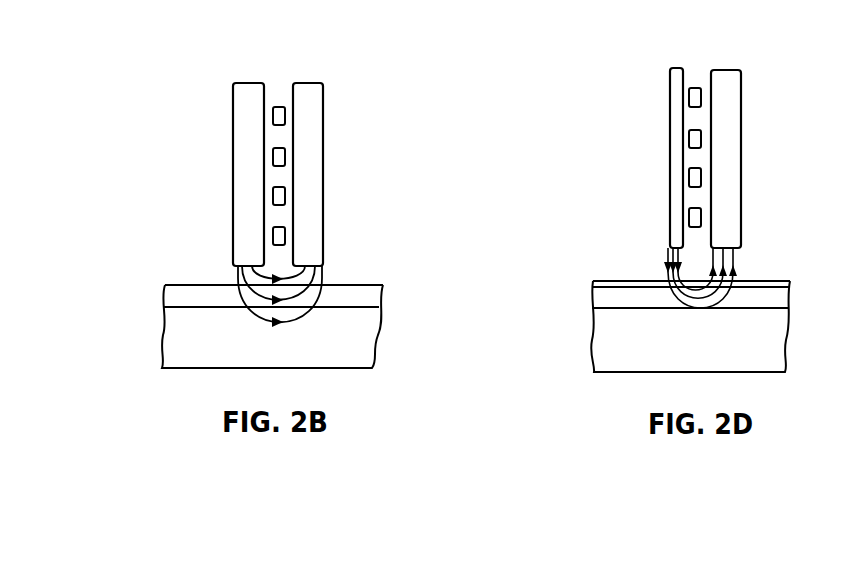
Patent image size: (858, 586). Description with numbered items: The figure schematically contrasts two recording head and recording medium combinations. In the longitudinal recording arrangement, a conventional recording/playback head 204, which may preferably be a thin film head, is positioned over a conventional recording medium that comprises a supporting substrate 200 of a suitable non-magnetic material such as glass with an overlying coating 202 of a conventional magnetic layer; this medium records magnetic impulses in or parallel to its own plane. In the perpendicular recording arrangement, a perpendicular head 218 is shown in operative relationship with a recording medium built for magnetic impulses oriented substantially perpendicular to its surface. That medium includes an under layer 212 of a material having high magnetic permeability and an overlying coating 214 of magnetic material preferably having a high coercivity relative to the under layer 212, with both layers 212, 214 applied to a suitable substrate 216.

In FIG. 2B, the supporting substrate 200 is at (168, 357).
In FIG. 2B, the overlying coating 202 is at (200, 292).
In FIG. 2B, the recording/playback head 204 is at (230, 169).
In FIG. 2D, the under layer 212 is at (598, 298).
In FIG. 2D, the overlying coating 214 is at (617, 280).
In FIG. 2D, the substrate 216 is at (667, 358).
In FIG. 2D, the perpendicular head 218 is at (743, 182).